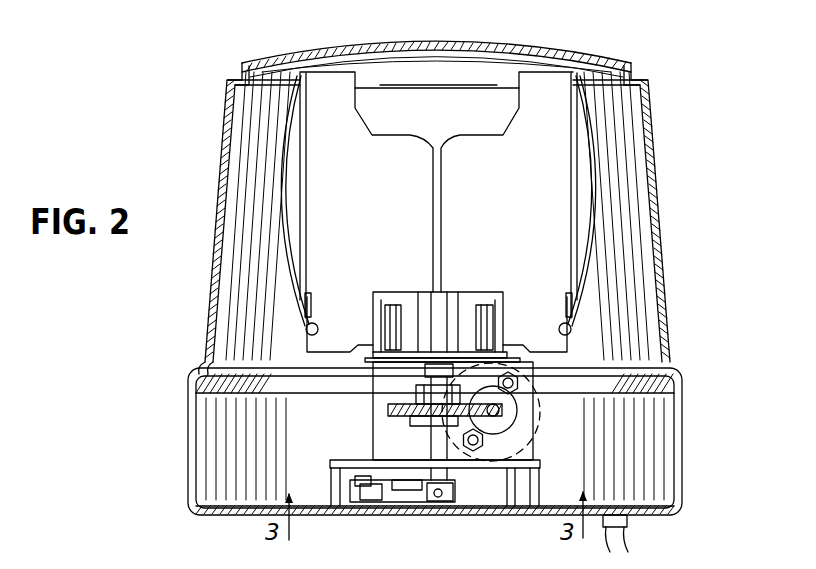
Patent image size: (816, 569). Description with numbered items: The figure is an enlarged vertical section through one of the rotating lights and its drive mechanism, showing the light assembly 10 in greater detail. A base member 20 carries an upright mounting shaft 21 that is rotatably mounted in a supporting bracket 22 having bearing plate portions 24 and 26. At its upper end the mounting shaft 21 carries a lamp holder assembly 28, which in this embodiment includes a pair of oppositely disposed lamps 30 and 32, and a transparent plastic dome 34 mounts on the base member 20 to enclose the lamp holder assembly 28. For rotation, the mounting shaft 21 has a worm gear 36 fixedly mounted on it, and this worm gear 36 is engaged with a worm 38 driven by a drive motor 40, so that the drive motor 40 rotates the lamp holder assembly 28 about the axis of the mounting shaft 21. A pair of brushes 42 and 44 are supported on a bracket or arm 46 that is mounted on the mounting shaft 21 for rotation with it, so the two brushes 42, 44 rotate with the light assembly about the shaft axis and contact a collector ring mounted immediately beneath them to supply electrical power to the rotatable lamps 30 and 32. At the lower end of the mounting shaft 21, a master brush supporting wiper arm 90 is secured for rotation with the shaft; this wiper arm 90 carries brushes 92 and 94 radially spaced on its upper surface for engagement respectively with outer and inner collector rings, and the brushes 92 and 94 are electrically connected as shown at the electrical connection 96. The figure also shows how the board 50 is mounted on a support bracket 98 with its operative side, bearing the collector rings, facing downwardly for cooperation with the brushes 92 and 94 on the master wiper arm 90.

The light assembly 10 is at (208, 96).
The base member 20 is at (192, 440).
The mounting shaft 21 is at (447, 320).
The supporting bracket 22 is at (366, 430).
The bearing plate portion 24 is at (382, 370).
The bearing plate portion 26 is at (352, 462).
The lamp holder assembly 28 is at (412, 130).
The lamp 30 is at (287, 150).
The lamp 32 is at (583, 172).
The transparent plastic dome 34 is at (663, 226).
The worm gear 36 is at (392, 412).
The worm 38 is at (500, 414).
The drive motor 40 is at (540, 402).
The brush 42 is at (392, 306).
The brush 44 is at (481, 322).
The bracket or arm 46 is at (432, 290).
The board 50 is at (507, 473).
The master brush supporting wiper arm 90 is at (403, 500).
The brush 92 is at (353, 478).
The brush 94 is at (447, 473).
The electrical connection 96 is at (400, 482).
The support bracket 98 is at (329, 478).